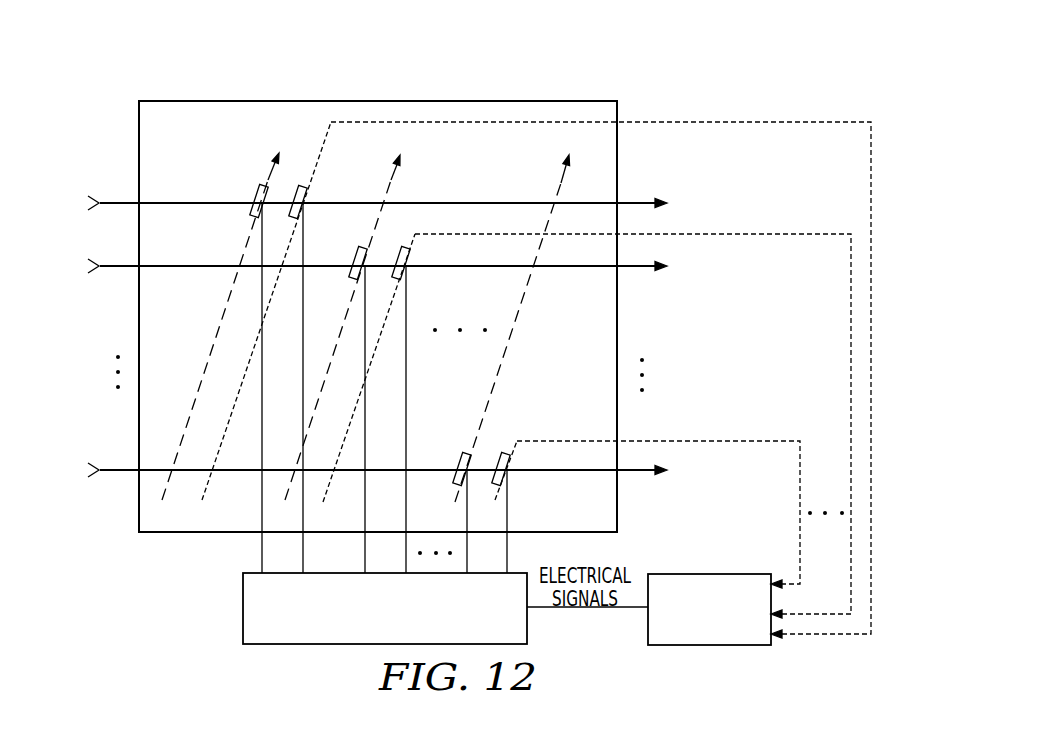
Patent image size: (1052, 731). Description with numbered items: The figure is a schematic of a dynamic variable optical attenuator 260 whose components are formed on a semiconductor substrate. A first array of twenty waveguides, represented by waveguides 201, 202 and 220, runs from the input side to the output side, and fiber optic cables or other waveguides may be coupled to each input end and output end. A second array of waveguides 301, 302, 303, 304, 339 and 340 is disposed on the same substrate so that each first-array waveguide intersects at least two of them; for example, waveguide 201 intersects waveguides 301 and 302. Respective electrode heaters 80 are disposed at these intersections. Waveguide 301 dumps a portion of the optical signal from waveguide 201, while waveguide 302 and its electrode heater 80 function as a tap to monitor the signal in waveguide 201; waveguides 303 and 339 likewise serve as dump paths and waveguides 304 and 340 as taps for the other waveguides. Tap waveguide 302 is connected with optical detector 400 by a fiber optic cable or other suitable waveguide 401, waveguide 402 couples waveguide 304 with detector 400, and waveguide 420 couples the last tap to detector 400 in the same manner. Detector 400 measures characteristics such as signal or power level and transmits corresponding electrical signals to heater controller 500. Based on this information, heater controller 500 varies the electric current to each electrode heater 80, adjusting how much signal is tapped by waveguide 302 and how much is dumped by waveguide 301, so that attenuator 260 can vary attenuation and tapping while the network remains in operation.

The dynamic variable optical attenuator 260 is at (294, 69).
The waveguide 201 is at (118, 203).
The waveguide 202 is at (118, 266).
The waveguide 220 is at (118, 470).
The electrode heater 80 is at (249, 211).
The waveguide 301 is at (222, 316).
The waveguide 302 is at (205, 490).
The waveguide 303 is at (393, 178).
The waveguide 304 is at (468, 236).
The waveguide 339 is at (563, 172).
The waveguide 340 is at (568, 441).
The waveguide 401 is at (752, 122).
The waveguide 402 is at (790, 236).
The waveguide 420 is at (718, 441).
The optical detector 400 is at (708, 574).
The heater controller 500 is at (242, 607).